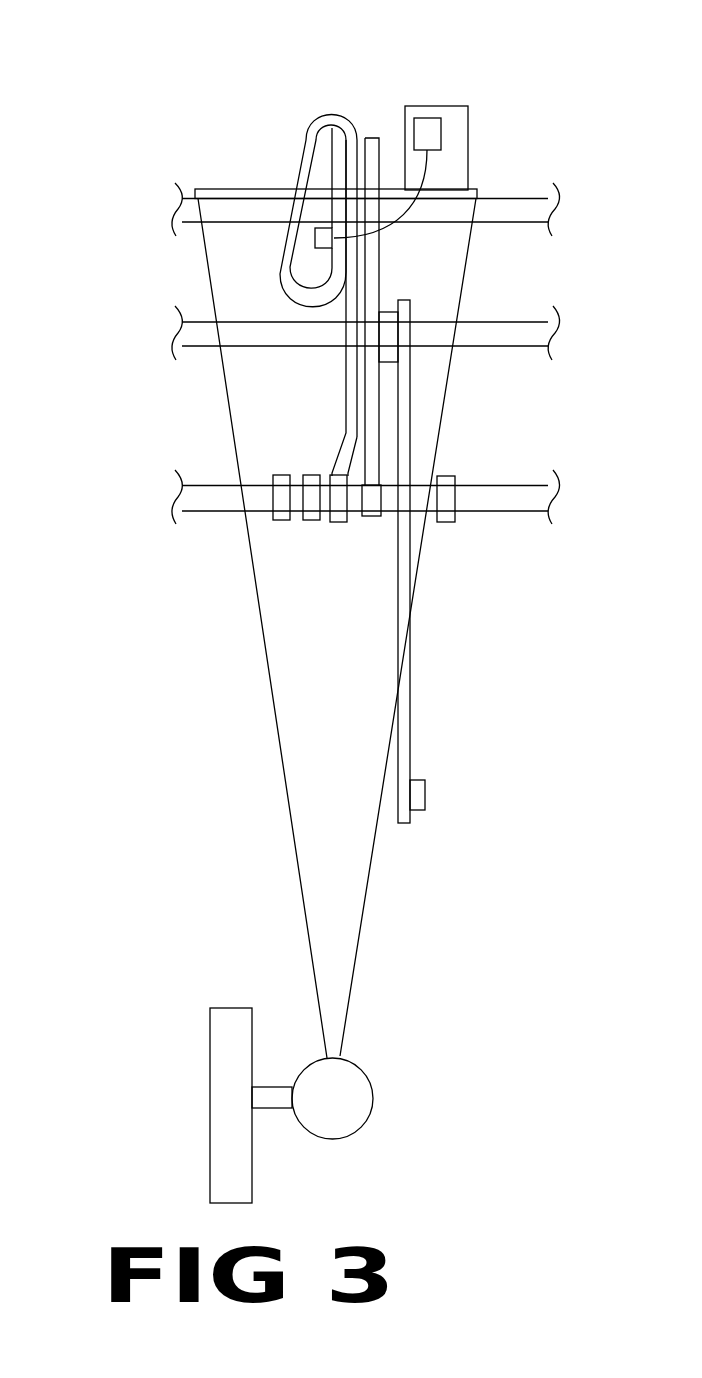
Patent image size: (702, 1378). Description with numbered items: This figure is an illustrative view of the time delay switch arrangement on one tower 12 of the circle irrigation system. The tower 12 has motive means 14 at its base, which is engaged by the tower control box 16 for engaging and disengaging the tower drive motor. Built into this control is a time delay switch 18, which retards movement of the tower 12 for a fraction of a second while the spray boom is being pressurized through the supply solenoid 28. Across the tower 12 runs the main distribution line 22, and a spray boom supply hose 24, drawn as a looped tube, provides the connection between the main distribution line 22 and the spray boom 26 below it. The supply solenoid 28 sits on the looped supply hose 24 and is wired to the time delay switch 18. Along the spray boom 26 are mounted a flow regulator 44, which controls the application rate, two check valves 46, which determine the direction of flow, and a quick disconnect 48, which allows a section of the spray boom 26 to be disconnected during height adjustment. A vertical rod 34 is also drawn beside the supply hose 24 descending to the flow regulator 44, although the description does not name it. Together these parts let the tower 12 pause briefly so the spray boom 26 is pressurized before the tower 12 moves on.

The tower 12 is at (278, 768).
The motive means 14 is at (334, 1068).
The tower control box 16 is at (468, 128).
The time delay switch 18 is at (433, 127).
The main distribution line 22 is at (212, 212).
The spray boom supply hose 24 is at (307, 130).
The spray boom 26 is at (213, 500).
The supply solenoid 28 is at (315, 235).
The rod 34 is at (377, 137).
The flow regulator 44 is at (338, 525).
The check valves 46 is at (307, 525).
The quick disconnect 48 is at (275, 523).